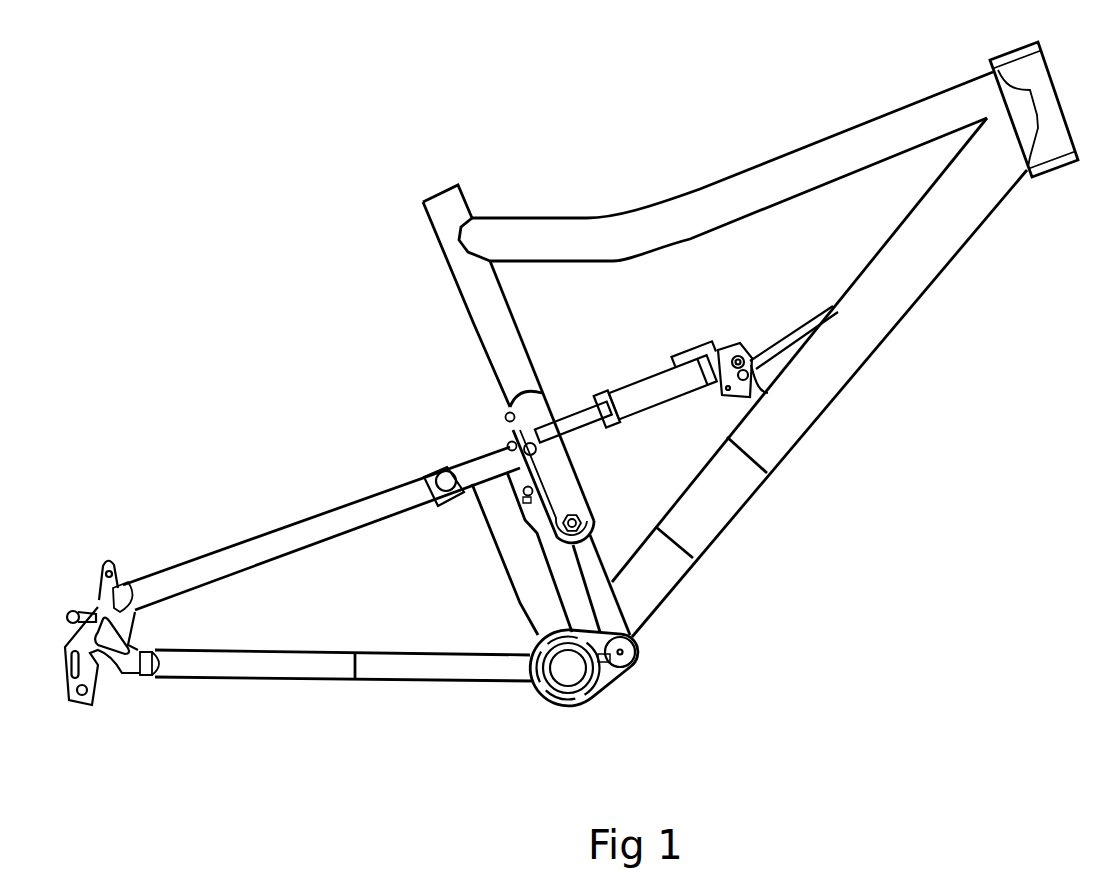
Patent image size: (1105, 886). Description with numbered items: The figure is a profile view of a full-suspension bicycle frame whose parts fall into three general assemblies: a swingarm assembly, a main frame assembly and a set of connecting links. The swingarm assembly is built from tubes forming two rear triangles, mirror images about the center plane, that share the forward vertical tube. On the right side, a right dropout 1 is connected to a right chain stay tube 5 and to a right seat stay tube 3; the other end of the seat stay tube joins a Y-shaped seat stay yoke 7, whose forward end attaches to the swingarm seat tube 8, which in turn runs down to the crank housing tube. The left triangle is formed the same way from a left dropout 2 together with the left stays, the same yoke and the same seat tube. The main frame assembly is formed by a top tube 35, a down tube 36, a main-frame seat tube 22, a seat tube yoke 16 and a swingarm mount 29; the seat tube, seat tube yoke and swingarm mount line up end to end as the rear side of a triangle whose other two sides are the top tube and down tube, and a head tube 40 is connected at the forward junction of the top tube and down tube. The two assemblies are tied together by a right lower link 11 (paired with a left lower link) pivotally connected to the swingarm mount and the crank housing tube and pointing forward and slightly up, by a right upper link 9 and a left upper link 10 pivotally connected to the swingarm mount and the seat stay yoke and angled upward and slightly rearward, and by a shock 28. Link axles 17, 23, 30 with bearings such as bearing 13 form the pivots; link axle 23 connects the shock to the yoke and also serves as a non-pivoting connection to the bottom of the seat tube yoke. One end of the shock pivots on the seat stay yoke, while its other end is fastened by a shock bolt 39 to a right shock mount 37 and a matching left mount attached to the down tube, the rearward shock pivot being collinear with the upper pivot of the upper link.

The right dropout 1 is at (90, 702).
The left dropout 2 is at (108, 563).
The right seat stay tube 3 is at (270, 532).
The right chain stay tube 5 is at (252, 678).
The seat stay yoke 7 is at (442, 466).
The seat tube 8 is at (520, 603).
The right upper link 9 is at (528, 491).
The left upper link 10 is at (528, 491).
The right lower link 11 is at (569, 708).
The bearing 13 is at (590, 698).
The seat tube yoke 16 is at (510, 417).
The link axle 17 is at (512, 446).
The seat tube 22 is at (440, 195).
The link axle 23 is at (592, 535).
The shock 28 is at (665, 370).
The swingarm mount 29 is at (618, 607).
The link axle 30 is at (632, 662).
The top tube 35 is at (728, 179).
The down tube 36 is at (722, 527).
The right shock mount 37 is at (775, 346).
The shock bolt 39 is at (752, 367).
The head tube 40 is at (1015, 52).